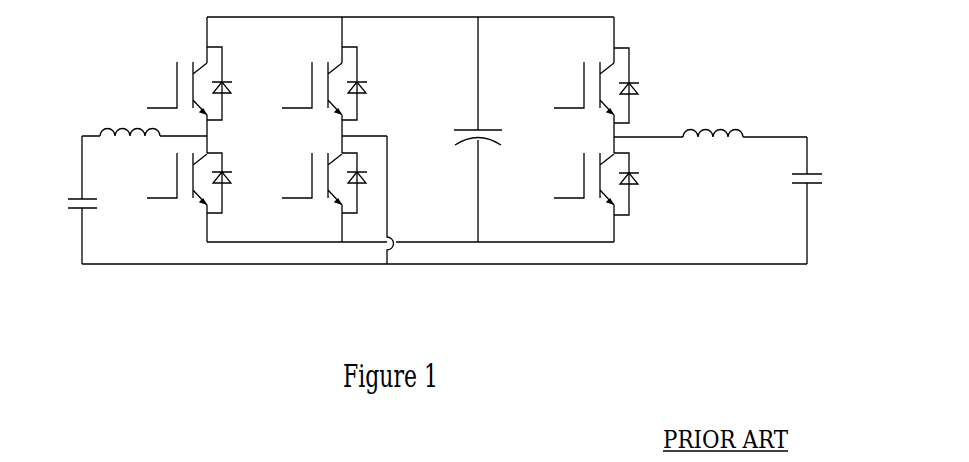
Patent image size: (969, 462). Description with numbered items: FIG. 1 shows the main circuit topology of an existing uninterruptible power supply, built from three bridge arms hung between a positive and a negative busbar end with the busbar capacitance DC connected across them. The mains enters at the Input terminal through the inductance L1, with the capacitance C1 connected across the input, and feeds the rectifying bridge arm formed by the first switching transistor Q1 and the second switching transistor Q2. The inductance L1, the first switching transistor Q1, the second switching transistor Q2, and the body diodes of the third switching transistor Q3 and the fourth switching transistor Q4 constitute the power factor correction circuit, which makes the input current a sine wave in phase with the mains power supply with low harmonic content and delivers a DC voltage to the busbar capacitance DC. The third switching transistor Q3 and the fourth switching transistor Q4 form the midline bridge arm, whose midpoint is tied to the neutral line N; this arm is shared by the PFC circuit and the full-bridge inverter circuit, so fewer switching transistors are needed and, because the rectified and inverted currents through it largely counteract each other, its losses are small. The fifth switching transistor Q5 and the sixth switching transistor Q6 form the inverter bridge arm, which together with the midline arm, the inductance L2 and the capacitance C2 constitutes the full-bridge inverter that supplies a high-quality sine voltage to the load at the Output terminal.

The first switching transistor Q1 is at (209, 83).
The second switching transistor Q2 is at (211, 183).
The third switching transistor Q3 is at (346, 83).
The fourth switching transistor Q4 is at (345, 183).
The fifth switching transistor Q5 is at (616, 85).
The sixth switching transistor Q6 is at (615, 184).
The inductance L1 is at (130, 148).
The inductance L2 is at (713, 149).
The capacitance C1 is at (65, 205).
The capacitance C2 is at (827, 180).
The busbar capacitance DC is at (474, 118).
The neutral line N is at (387, 217).
The input terminal Input is at (60, 121).
The output terminal Output is at (826, 123).